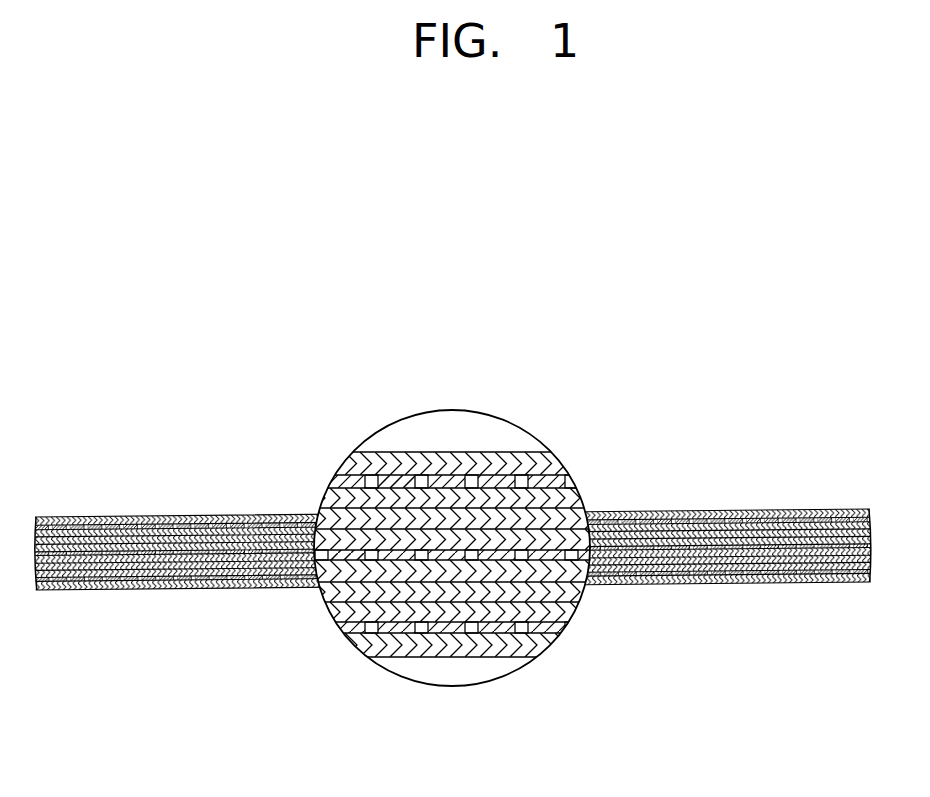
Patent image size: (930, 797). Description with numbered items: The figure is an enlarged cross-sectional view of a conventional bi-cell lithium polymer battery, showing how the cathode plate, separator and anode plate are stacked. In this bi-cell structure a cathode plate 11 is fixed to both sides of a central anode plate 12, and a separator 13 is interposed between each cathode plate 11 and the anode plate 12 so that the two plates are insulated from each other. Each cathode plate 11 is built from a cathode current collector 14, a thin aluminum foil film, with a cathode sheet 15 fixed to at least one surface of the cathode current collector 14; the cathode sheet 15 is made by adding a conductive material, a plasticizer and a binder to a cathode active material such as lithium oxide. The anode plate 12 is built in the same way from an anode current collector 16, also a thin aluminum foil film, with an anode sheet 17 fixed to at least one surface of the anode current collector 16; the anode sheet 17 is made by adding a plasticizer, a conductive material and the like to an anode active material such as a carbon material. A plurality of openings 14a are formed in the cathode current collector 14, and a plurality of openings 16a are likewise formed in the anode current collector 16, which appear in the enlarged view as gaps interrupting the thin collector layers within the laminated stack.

The cathode plate 11 is at (663, 353).
The anode plate 12 is at (663, 625).
The separator 13 is at (584, 515).
The cathode current collector 14 is at (574, 482).
The openings 14a is at (422, 478).
The cathode sheet 15 is at (556, 452).
The anode current collector 16 is at (570, 555).
The openings 16a is at (368, 548).
The anode sheet 17 is at (605, 573).